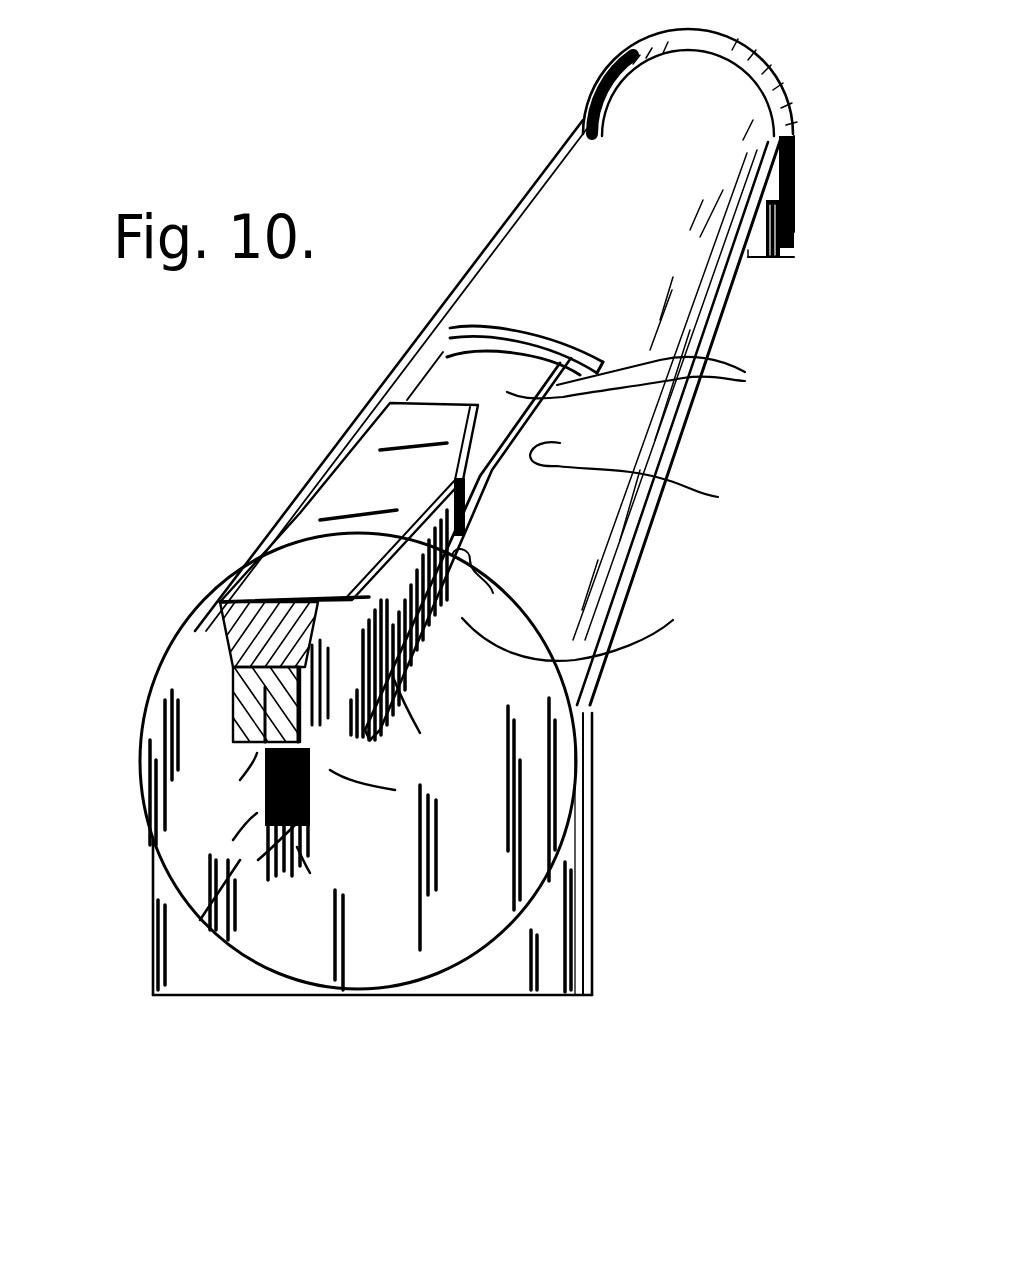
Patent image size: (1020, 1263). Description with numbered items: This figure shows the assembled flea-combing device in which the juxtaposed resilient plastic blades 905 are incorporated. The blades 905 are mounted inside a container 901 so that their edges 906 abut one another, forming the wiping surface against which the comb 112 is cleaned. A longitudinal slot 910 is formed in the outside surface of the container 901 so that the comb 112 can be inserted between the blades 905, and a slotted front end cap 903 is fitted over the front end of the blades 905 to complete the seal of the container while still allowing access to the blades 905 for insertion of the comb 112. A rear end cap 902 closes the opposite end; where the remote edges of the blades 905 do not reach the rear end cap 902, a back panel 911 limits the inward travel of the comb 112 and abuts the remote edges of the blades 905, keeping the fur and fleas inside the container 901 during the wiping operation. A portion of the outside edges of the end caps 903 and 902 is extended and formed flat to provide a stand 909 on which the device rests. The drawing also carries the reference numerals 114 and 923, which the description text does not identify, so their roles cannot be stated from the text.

The comb 112 is at (260, 525).
The bar shading/body 114 is at (263, 865).
The container 901 is at (514, 190).
The rear end cap 902 is at (657, 38).
The front end cap 903 is at (528, 795).
The blades 905 is at (655, 379).
The edges 906 is at (563, 347).
The stand 909 is at (790, 233).
The longitudinal slot 910 is at (648, 483).
The back panel 911 is at (470, 343).
The ring 923 is at (596, 633).